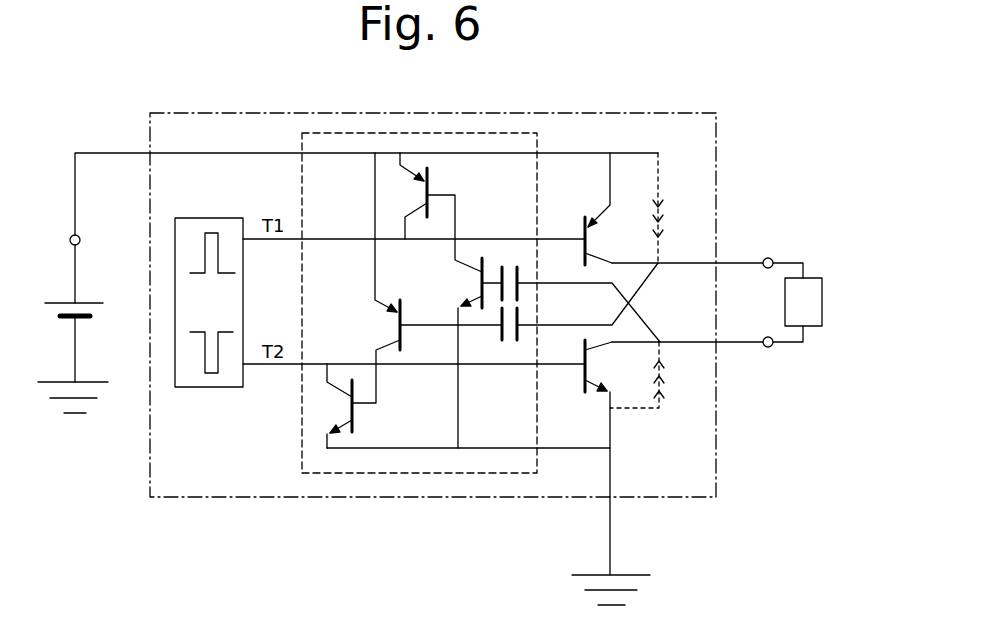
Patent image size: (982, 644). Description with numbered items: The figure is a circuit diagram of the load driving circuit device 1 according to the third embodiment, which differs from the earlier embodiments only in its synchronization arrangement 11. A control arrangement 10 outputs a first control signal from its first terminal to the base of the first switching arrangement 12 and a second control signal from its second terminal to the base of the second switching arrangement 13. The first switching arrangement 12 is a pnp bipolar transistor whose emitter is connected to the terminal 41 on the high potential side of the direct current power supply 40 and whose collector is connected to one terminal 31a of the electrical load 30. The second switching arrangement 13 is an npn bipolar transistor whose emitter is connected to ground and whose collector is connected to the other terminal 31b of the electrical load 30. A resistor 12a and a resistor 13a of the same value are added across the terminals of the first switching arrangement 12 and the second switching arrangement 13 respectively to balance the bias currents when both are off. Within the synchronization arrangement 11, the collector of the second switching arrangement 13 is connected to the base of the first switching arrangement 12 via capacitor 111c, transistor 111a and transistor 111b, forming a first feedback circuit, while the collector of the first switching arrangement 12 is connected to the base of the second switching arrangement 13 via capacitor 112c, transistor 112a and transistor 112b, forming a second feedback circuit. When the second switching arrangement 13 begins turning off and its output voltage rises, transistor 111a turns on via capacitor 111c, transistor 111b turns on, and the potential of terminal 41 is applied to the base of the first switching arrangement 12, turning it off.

The load driving circuit device 1 is at (262, 97).
The control arrangement 10 is at (190, 388).
The synchronization arrangement 11 is at (302, 455).
The first switching arrangement 12 is at (583, 225).
The resistor 12a is at (662, 222).
The second switching arrangement 13 is at (583, 382).
The resistor 13a is at (662, 388).
The electrical load 30 is at (823, 292).
The terminal of electrical load 31a is at (768, 257).
The terminal of electrical load 31b is at (772, 348).
The direct current power supply 40 is at (97, 302).
The terminal on the high potential side 41 is at (81, 240).
The transistor 111a is at (463, 283).
The transistor 111b is at (430, 169).
The capacitor 111c is at (510, 265).
The transistor 112a is at (388, 328).
The transistor 112b is at (356, 426).
The capacitor 112c is at (510, 343).